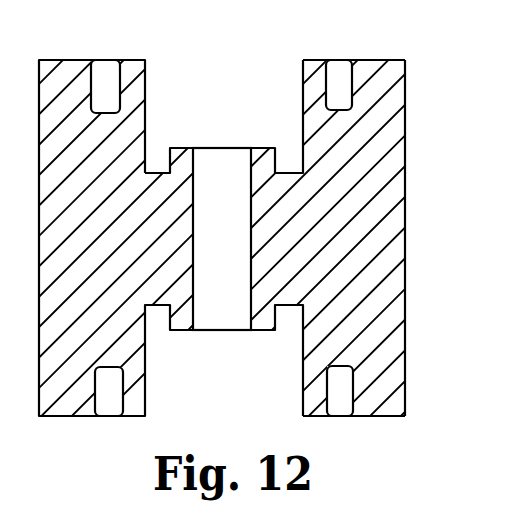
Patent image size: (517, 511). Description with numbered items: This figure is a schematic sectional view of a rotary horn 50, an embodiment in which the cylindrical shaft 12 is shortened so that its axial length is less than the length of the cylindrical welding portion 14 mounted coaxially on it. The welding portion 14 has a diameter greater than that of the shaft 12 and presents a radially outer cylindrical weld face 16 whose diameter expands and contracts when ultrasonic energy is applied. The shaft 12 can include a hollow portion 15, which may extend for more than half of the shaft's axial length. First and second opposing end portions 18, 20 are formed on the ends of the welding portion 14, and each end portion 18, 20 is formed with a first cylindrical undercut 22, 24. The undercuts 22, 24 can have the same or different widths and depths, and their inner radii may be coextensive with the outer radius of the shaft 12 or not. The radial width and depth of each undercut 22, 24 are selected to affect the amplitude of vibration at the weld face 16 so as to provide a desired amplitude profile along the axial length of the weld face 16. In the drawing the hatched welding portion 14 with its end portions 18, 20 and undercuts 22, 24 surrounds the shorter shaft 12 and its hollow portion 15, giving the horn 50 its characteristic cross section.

The cylindrical shaft 12 is at (178, 163).
The cylindrical welding portion 14 is at (405, 212).
The hollow portion 15 is at (195, 312).
The weld face 16 is at (406, 332).
The first end portion 18 is at (390, 418).
The second end portion 20 is at (392, 60).
The first cylindrical undercut 22 is at (351, 390).
The first cylindrical undercut 24 is at (348, 78).
The horn 50 is at (405, 140).